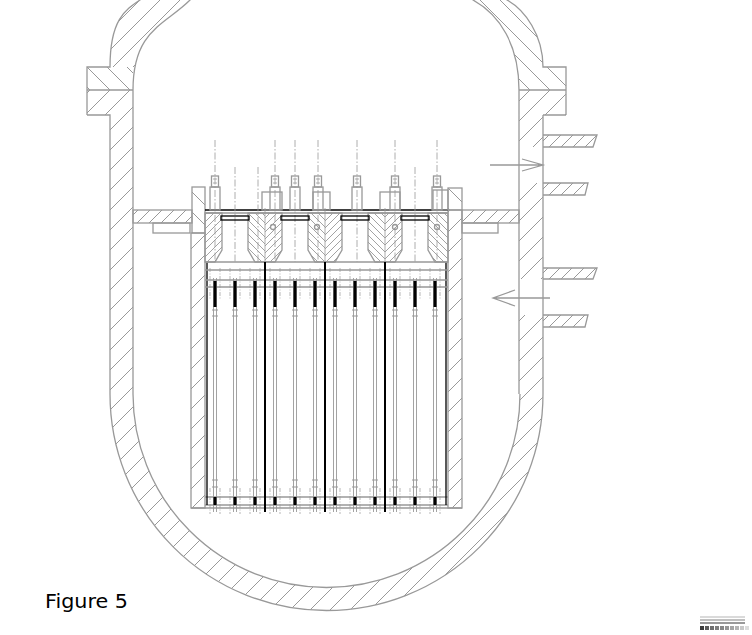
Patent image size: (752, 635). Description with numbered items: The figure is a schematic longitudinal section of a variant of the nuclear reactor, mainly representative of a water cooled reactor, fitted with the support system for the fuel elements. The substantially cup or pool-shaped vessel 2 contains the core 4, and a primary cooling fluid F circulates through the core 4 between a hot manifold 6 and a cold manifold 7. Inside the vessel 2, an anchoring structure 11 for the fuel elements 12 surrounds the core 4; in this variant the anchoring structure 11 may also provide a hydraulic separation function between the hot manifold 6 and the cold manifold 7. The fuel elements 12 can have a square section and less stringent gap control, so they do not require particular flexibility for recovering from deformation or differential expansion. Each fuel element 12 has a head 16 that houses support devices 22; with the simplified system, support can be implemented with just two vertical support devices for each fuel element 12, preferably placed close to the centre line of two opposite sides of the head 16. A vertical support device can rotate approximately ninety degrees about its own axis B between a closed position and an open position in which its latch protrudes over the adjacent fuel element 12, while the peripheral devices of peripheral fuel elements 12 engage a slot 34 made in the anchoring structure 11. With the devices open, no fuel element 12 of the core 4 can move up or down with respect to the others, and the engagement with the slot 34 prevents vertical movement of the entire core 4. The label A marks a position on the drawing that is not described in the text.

The vessel 2 is at (110, 413).
The core 4 is at (328, 291).
The hot manifold 6 is at (494, 86).
The cold manifold 7 is at (178, 452).
The anchoring structure 11 is at (455, 358).
The fuel element 12 is at (403, 433).
The head 16 is at (195, 210).
The support device 22 is at (322, 140).
The slot 34 is at (453, 188).
The fuel assembly A is at (235, 153).
The axis B is at (270, 126).
The primary cooling fluid F is at (163, 402).